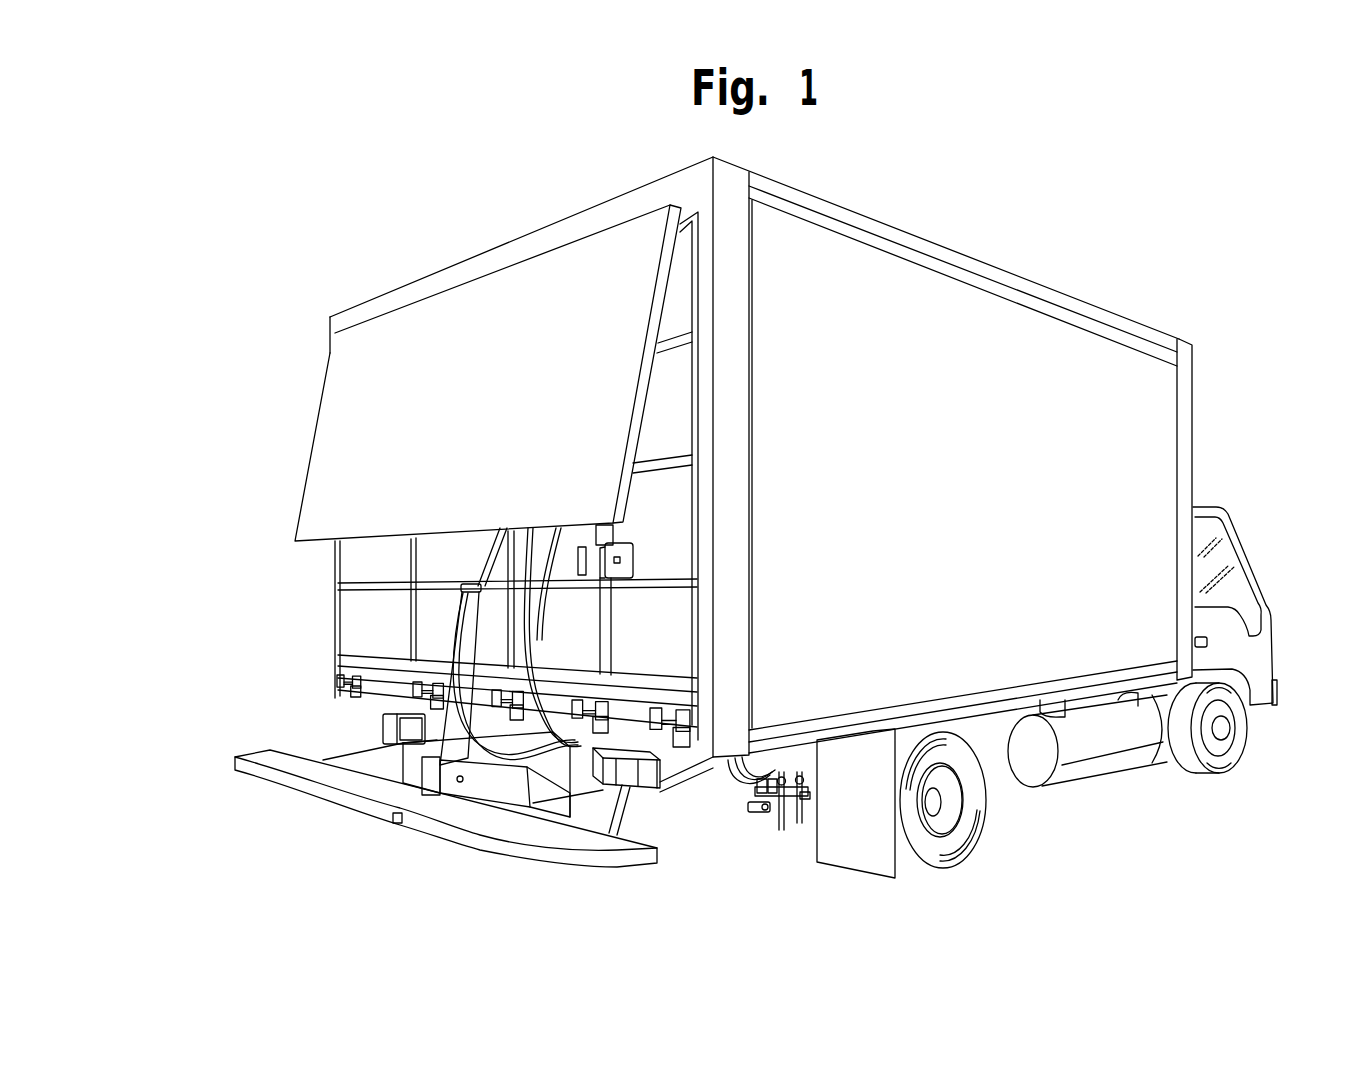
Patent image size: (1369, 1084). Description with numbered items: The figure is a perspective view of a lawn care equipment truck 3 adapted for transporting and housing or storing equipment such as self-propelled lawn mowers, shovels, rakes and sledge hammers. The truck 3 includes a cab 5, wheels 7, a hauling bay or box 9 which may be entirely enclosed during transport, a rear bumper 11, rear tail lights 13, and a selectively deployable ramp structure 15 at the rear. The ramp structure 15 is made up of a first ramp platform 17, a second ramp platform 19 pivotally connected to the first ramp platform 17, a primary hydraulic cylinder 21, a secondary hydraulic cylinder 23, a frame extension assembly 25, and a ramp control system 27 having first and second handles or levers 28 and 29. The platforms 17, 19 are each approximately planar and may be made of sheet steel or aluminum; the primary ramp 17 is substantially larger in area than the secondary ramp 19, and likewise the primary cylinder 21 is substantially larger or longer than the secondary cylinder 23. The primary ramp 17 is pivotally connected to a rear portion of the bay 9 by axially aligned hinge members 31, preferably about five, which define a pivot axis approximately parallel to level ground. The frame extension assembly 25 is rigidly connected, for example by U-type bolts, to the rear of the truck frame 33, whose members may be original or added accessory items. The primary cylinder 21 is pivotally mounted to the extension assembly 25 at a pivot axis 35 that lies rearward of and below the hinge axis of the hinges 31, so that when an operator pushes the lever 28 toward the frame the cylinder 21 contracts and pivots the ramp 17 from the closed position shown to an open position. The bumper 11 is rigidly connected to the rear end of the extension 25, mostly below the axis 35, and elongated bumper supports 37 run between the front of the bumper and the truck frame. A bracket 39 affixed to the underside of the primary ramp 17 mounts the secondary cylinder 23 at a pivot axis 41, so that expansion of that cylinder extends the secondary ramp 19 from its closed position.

The truck 3 is at (947, 230).
The cab 5 is at (1278, 660).
The wheels 7 is at (1226, 776).
The hauling bay or box 9 is at (1062, 352).
The rear bumper 11 is at (637, 865).
The rear tail lights 13 is at (383, 718).
The selectively deployable ramp structure 15 is at (280, 480).
The first ramp platform 17 is at (667, 413).
The second ramp platform 19 is at (342, 395).
The primary hydraulic cylinder 21 is at (475, 620).
The secondary hydraulic cylinder 23 is at (603, 533).
The frame extension assembly 25 is at (513, 787).
The ramp control system 27 is at (782, 830).
The first handle/lever 28 is at (798, 828).
The second handle/lever 29 is at (807, 800).
The hinge members 31 is at (350, 687).
The truck frame 33 is at (552, 787).
The pivot point/axis 35 is at (460, 782).
The elongated bumper supports 37 is at (347, 757).
The bracket 39 is at (633, 555).
The pivot axis 41 is at (620, 561).